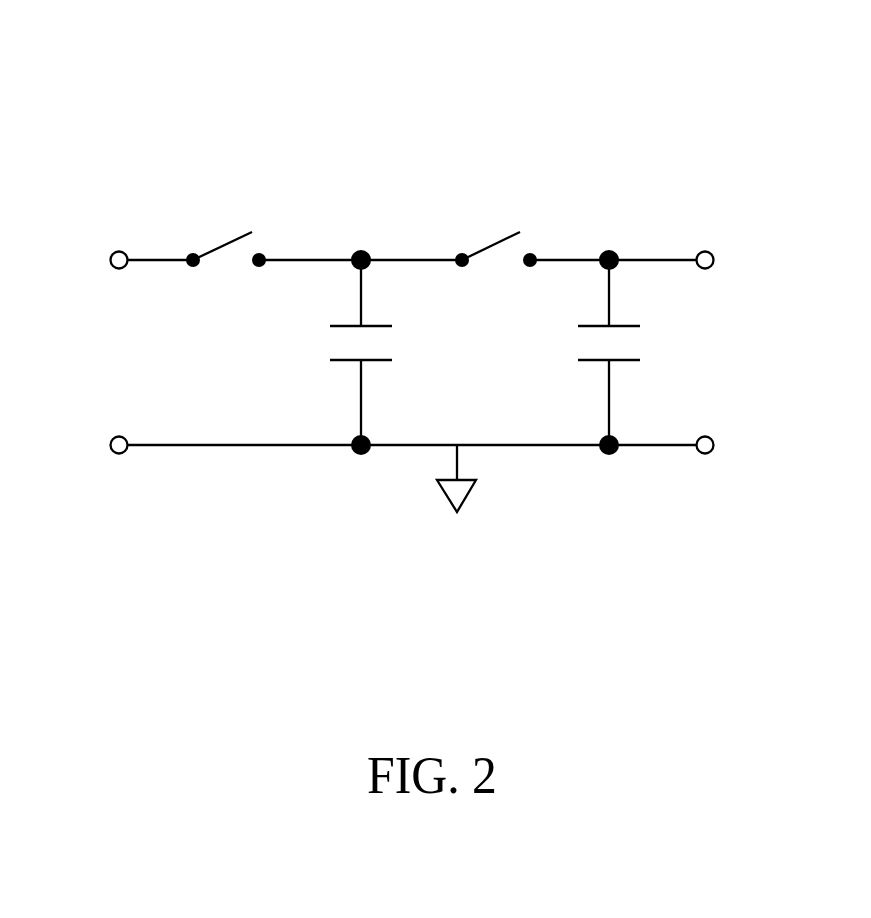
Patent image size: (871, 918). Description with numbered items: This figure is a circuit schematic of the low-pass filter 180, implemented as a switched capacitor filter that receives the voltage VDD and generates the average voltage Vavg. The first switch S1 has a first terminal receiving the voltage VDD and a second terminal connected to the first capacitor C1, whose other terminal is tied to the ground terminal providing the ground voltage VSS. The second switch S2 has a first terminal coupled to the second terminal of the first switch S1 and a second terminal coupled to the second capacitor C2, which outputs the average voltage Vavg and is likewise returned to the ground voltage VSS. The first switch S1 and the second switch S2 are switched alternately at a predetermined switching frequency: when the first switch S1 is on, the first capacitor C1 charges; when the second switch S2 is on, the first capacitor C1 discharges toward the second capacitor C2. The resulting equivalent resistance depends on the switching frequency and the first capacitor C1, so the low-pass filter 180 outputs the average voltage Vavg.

The low-pass filter 180 is at (723, 127).
The first switch S1 is at (226, 235).
The second switch S2 is at (496, 234).
The first capacitor C1 is at (382, 352).
The second capacitor C2 is at (630, 352).
The voltage VDD is at (61, 259).
The average voltage Vavg is at (753, 255).
The ground voltage VSS is at (455, 500).